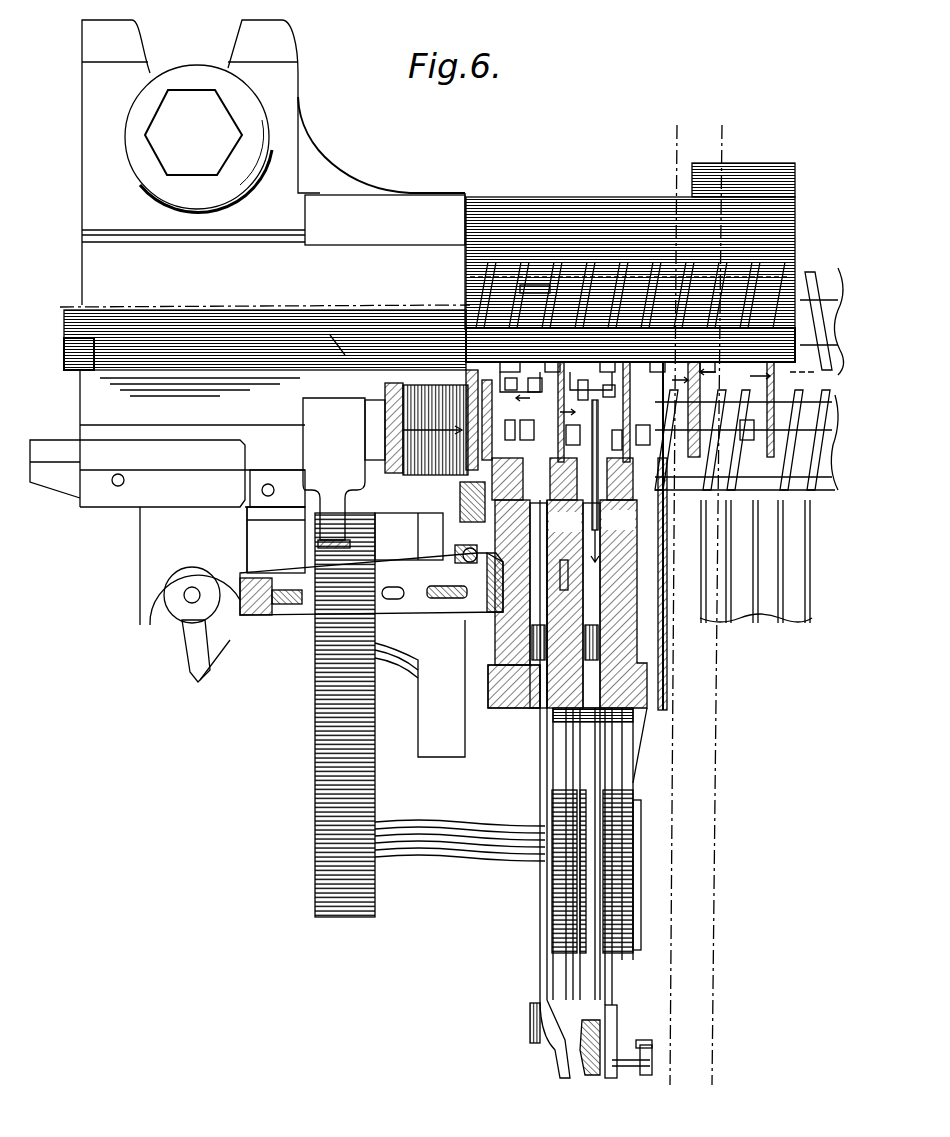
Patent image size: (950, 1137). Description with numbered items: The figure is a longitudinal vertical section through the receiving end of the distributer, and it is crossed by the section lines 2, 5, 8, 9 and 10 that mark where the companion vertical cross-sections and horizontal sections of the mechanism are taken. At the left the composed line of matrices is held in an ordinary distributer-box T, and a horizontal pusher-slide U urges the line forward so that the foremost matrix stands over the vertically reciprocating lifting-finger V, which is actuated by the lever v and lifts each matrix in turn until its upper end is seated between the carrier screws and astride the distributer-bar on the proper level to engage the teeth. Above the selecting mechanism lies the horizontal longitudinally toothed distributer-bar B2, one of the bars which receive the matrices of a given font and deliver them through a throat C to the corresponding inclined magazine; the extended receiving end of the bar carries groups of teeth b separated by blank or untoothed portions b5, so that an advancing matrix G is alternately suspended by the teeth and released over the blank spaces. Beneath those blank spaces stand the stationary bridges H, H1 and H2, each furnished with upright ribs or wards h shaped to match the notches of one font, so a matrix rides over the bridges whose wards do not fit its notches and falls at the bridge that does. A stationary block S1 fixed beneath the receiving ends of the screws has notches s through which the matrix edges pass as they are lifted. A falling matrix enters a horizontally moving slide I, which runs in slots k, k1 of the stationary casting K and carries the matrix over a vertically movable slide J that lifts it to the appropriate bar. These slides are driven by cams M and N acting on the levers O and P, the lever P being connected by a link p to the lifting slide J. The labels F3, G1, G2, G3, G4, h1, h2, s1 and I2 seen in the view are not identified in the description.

The section line 8 is at (436, 337).
The section line 9 is at (772, 310).
The section line 5 is at (672, 606).
The section line 2 is at (716, 606).
The section line 10 is at (463, 553).
The distributer-box T is at (265, 363).
The pusher-slide U is at (334, 473).
The lifting-finger V is at (409, 536).
The lever v is at (371, 584).
The distributer-bar B2 is at (630, 262).
The teeth b is at (630, 295).
The blank or untoothed portions b5 is at (555, 292).
The bracket F3 is at (822, 301).
The matrices G is at (527, 432).
The guide G1 is at (440, 478).
The guide G2 is at (574, 436).
The guide G3 is at (645, 437).
The guide G4 is at (737, 432).
The upright ribs or wards h is at (507, 432).
The hook h1 is at (582, 391).
The hook h2 is at (616, 443).
The bridge H is at (562, 472).
The bridge H1 is at (535, 604).
The bridge H2 is at (623, 604).
The notches s is at (511, 386).
The stationary block S1 is at (534, 388).
The stop s1 is at (608, 394).
The slot or guide k is at (558, 575).
The slot or guide k1 is at (605, 498).
The horizontally moving slide I is at (530, 622).
The plate I2 is at (660, 522).
The vertically movable slide J is at (585, 646).
The stationary casting or support K is at (492, 700).
The cam M is at (612, 850).
The cam N is at (640, 890).
The link p is at (538, 983).
The lever P is at (548, 1040).
The lever O is at (592, 1075).
The throat C is at (746, 525).